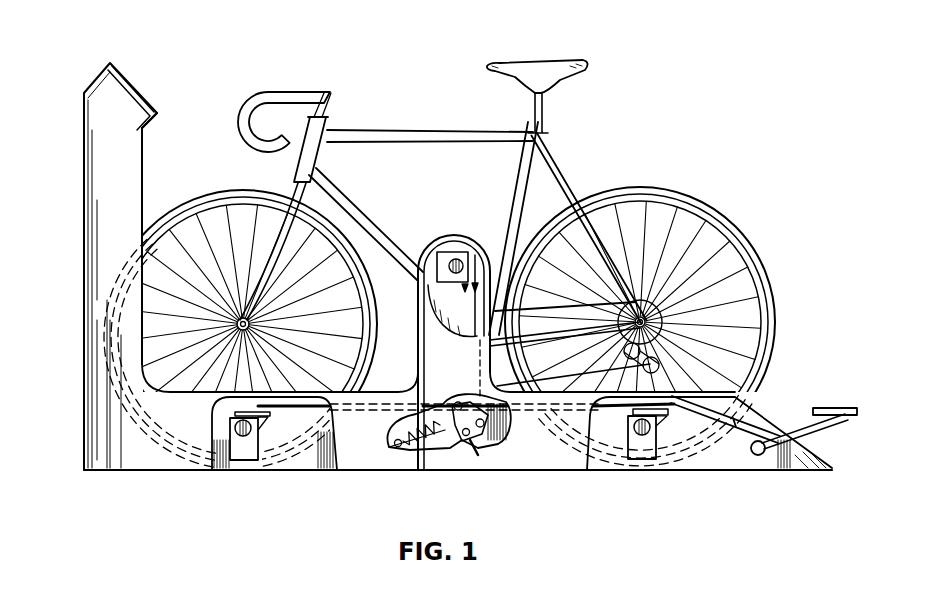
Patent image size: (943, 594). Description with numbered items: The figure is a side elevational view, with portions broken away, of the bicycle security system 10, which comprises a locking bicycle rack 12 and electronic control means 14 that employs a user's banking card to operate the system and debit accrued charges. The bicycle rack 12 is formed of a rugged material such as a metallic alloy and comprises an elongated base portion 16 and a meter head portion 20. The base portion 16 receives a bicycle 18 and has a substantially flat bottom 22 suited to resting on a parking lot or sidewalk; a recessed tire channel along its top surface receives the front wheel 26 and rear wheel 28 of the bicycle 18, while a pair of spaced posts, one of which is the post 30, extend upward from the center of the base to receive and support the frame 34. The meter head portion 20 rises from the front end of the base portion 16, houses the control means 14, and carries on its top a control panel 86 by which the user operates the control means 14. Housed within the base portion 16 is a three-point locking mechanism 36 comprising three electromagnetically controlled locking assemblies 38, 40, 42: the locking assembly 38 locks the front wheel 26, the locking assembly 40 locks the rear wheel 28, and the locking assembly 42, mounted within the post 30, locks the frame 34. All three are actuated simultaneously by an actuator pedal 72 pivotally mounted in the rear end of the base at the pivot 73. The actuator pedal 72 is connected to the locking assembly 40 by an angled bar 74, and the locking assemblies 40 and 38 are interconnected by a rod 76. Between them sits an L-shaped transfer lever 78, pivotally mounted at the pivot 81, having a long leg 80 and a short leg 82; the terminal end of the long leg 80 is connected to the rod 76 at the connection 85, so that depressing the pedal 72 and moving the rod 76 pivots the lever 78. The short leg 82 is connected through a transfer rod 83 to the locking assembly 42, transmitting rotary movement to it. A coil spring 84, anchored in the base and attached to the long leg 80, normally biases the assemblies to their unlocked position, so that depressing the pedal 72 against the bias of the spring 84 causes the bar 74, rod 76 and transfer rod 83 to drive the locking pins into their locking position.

The bicycle security system 10 is at (414, 78).
The locking bicycle rack 12 is at (82, 384).
The electronic control means 14 is at (163, 100).
The base portion 16 is at (327, 474).
The bicycle 18 is at (542, 64).
The meter head portion 20 is at (103, 181).
The flat bottom 22 is at (163, 473).
The front wheel 26 is at (188, 200).
The rear wheel 28 is at (670, 187).
The post 30 is at (462, 236).
The frame 34 is at (530, 192).
The three-point locking mechanism 36 is at (480, 446).
The locking assembly 38 is at (246, 463).
The locking assembly 40 is at (645, 462).
The locking assembly 42 is at (446, 250).
The actuator pedal 72 is at (845, 420).
The pivot 73 is at (762, 456).
The angled bar 74 is at (730, 434).
The rod 76 is at (596, 415).
The L-shaped transfer lever 78 is at (456, 432).
The long leg 80 is at (432, 436).
The pivot 81 is at (468, 440).
The short leg 82 is at (490, 452).
The transfer rod 83 is at (440, 309).
The coil spring 84 is at (405, 446).
The connection 85 is at (496, 428).
The control panel 86 is at (128, 80).